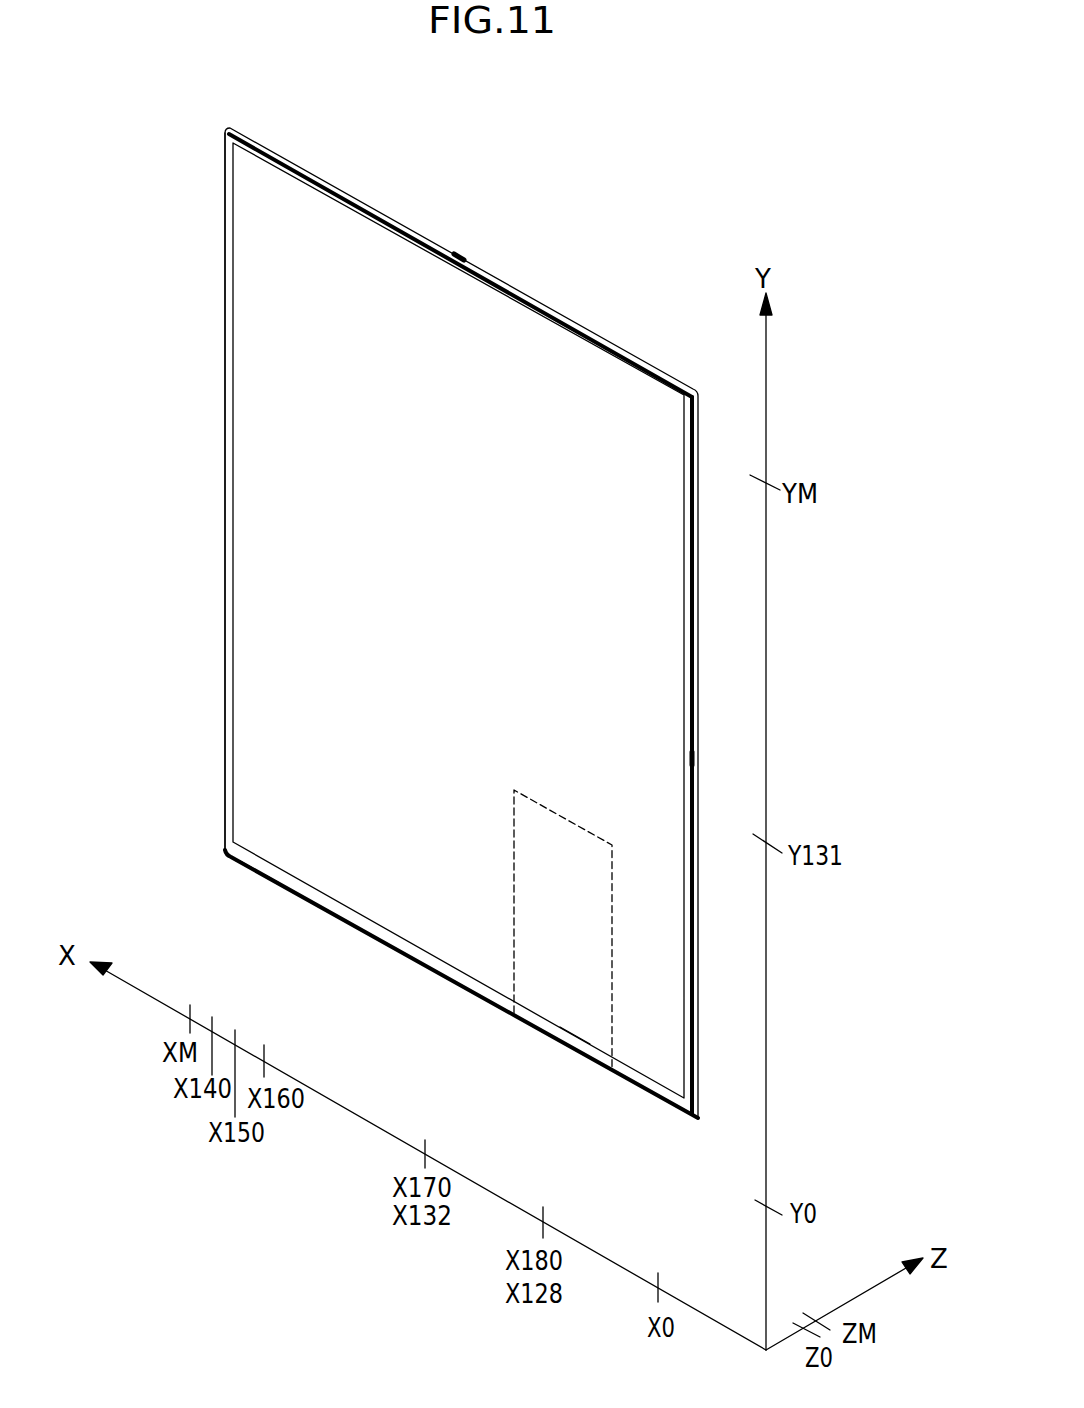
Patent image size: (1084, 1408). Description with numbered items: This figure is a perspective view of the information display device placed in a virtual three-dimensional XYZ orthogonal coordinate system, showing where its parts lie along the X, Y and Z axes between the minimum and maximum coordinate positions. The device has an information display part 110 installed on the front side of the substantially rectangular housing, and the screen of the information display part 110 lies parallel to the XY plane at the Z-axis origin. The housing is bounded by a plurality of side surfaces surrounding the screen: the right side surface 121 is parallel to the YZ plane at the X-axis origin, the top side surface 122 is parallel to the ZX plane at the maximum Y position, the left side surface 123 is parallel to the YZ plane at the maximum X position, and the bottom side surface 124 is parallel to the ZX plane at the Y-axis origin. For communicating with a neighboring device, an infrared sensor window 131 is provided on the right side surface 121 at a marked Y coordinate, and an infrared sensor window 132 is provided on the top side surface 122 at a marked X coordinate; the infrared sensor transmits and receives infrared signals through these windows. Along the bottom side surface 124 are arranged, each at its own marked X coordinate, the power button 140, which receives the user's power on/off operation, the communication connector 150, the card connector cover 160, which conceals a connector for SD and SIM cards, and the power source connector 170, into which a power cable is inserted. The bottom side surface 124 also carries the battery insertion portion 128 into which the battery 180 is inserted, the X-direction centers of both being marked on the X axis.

The information display part 110 is at (472, 470).
The right side surface 121 is at (698, 472).
The top side surface 122 is at (582, 332).
The left side surface 123 is at (224, 384).
The bottom side surface 124 is at (382, 943).
The battery insertion portion 128 is at (568, 1017).
The infrared sensor window 131 is at (698, 750).
The infrared sensor window 132 is at (460, 256).
The power button 140 is at (248, 865).
The communication connector 150 is at (273, 878).
The card connector cover 160 is at (300, 897).
The power source connector 170 is at (458, 987).
The battery 180 is at (562, 957).